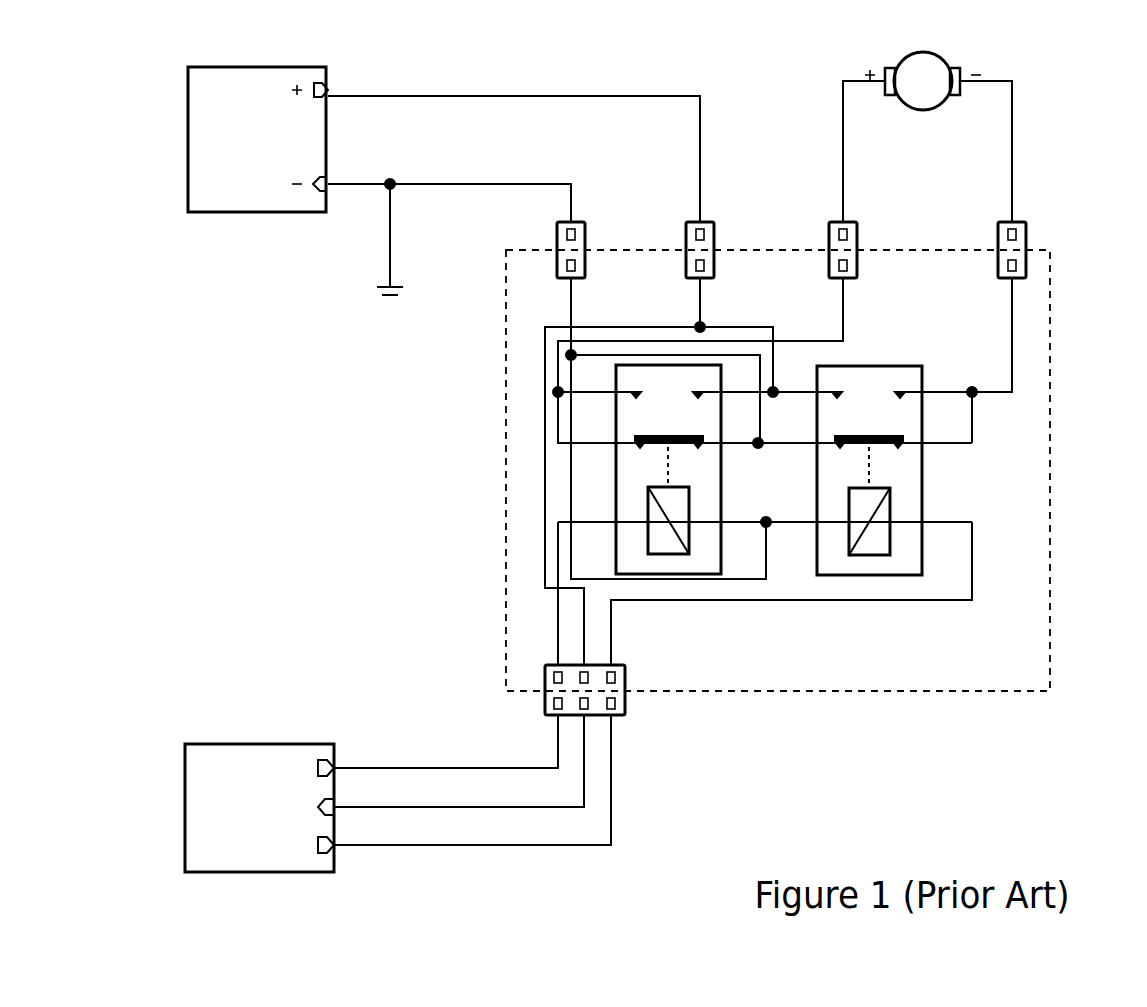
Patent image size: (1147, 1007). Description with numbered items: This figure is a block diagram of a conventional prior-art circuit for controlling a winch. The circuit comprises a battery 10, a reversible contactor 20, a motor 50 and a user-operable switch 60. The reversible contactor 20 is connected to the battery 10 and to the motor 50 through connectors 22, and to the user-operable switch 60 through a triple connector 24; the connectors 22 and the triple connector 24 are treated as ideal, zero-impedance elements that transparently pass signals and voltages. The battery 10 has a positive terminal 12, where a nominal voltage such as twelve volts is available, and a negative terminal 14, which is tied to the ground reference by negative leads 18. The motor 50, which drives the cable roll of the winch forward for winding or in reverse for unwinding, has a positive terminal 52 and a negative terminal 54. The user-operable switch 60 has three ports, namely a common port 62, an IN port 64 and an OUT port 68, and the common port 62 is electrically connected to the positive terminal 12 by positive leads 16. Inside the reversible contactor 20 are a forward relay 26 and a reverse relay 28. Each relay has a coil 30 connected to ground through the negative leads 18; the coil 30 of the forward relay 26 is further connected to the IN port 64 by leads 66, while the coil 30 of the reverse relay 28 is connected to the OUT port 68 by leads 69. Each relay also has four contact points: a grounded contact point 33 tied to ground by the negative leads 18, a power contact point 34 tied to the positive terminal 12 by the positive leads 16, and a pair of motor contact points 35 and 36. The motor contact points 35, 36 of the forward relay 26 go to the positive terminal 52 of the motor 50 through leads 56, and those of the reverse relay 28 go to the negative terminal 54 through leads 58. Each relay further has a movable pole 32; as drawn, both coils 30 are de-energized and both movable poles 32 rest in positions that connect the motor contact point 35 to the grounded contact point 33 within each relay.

The battery 10 is at (290, 67).
The positive terminal 12 is at (330, 88).
The negative terminal 14 is at (330, 178).
The positive leads 16 is at (555, 96).
The negative leads 18 is at (487, 184).
The reversible contactor 20 is at (1050, 360).
The connectors 22 is at (575, 222).
The triple connector 24 is at (625, 710).
The forward relay 26 is at (721, 520).
The reverse relay 28 is at (922, 528).
The coil 30 is at (648, 545).
The movable pole 32 is at (655, 447).
The grounded contact point 33 is at (706, 447).
The power contact point 34 is at (695, 398).
The motor contact point 35 is at (633, 447).
The motor contact point 36 is at (640, 393).
The motor 50 is at (923, 110).
The positive terminal 52 is at (884, 70).
The negative terminal 54 is at (962, 70).
The leads 56 is at (843, 140).
The leads 58 is at (1012, 140).
The user-operable switch 60 is at (232, 744).
The common port 62 is at (334, 802).
The IN port 64 is at (322, 760).
The leads 66 is at (466, 768).
The OUT port 68 is at (324, 853).
The leads 69 is at (458, 846).